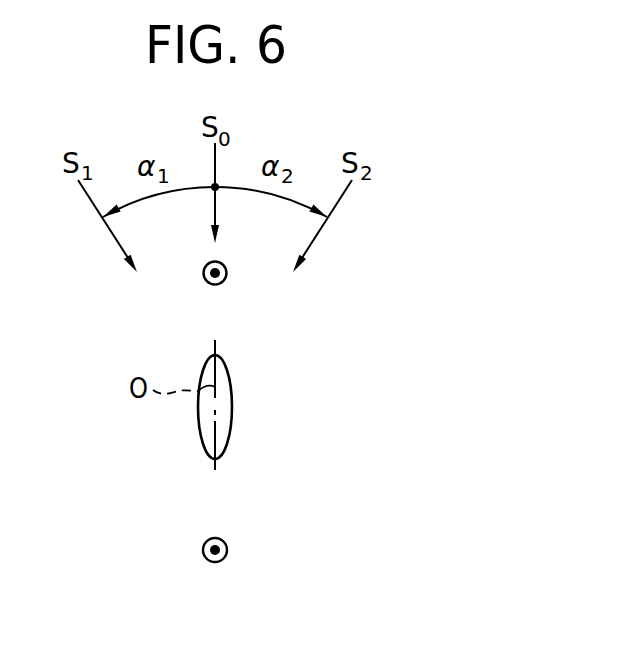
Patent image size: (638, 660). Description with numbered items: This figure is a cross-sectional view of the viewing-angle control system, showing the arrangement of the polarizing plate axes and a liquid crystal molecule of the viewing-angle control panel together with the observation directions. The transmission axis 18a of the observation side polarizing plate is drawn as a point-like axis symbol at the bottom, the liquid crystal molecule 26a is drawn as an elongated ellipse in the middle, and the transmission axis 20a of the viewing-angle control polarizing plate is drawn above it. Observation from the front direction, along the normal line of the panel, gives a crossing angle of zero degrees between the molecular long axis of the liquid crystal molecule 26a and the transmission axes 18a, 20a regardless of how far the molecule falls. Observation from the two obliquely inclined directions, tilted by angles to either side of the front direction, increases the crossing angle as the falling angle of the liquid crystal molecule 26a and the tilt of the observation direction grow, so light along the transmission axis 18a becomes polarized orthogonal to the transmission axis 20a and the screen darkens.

The transmission axis of the observation side polarizing plate 18a is at (227, 549).
The transmission axis of the viewing-angle control polarizing plate 20a is at (205, 278).
The liquid crystal molecule 26a is at (232, 402).